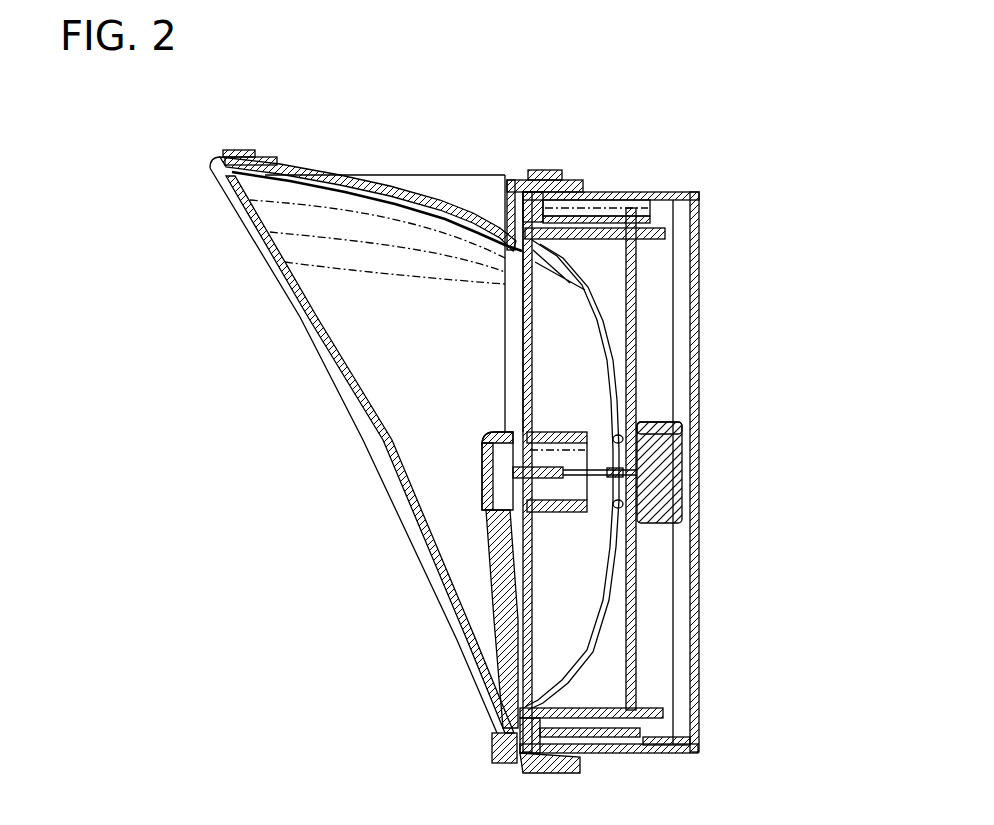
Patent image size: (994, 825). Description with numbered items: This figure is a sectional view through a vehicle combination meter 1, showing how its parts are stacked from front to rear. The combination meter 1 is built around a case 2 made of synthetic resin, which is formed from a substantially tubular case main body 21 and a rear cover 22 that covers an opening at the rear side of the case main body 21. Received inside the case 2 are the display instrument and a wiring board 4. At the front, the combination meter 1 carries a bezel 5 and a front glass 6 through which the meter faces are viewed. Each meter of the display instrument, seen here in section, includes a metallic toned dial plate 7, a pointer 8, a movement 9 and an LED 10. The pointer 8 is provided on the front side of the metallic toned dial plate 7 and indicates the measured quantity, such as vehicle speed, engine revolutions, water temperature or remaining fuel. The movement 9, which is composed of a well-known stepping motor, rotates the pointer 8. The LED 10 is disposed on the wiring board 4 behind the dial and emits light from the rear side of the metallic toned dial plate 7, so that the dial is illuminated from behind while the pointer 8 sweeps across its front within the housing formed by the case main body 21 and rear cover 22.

The combination meter 1 is at (466, 416).
The case 2 is at (604, 416).
The case main body 21 is at (605, 191).
The rear cover 22 is at (705, 219).
The wiring board 4 is at (634, 300).
The bezel 5 is at (426, 184).
The front glass 6 is at (265, 242).
The metallic toned dial plate 7 is at (512, 290).
The pointer 8 is at (492, 520).
The movement 9 is at (664, 480).
The LED 10 is at (683, 425).